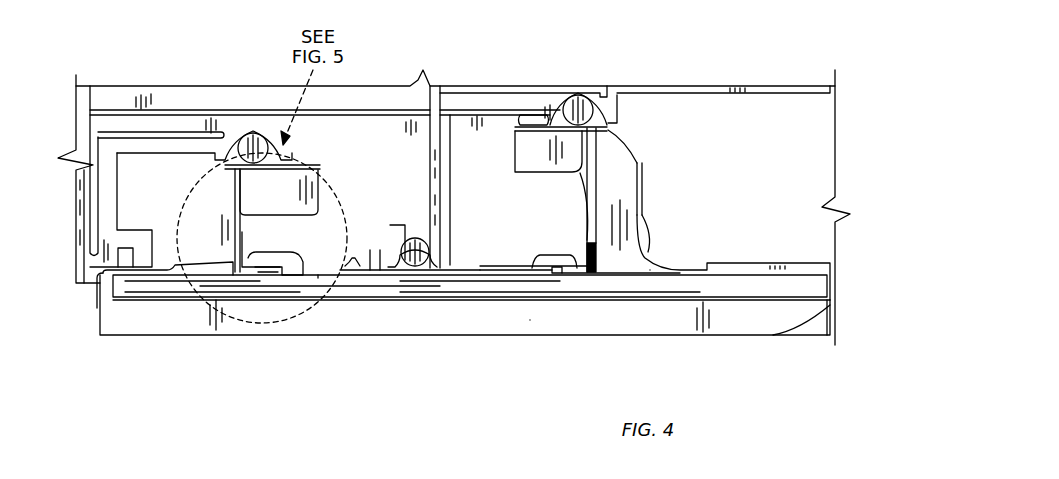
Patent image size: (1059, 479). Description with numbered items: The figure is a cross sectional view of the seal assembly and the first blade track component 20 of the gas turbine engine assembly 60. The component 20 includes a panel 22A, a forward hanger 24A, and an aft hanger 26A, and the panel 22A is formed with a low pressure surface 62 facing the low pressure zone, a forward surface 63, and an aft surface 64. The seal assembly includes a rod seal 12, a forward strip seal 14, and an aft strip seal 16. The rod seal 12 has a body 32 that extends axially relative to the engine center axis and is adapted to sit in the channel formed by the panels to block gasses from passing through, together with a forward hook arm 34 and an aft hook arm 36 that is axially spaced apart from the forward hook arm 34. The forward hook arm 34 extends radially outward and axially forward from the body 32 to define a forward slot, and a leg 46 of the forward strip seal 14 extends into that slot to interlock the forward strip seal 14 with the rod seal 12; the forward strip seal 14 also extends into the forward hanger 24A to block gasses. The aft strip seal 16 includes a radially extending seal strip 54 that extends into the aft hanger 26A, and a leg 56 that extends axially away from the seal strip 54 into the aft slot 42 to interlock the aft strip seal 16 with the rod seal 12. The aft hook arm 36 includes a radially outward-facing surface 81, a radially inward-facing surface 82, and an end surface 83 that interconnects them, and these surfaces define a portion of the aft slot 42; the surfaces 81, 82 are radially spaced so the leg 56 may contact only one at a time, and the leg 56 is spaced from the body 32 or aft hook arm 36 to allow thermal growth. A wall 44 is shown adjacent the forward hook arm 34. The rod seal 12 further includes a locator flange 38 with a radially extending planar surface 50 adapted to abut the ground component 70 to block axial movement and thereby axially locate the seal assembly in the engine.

The rod seal 12 is at (160, 292).
The forward strip seal 14 is at (230, 208).
The aft strip seal 16 is at (605, 168).
The component 20 is at (785, 225).
The panel 22A is at (683, 262).
The forward hanger 24A is at (222, 168).
The aft hanger 26A is at (632, 143).
The body 32 is at (317, 282).
The forward hook arm 34 is at (278, 248).
The aft hook arm 36 is at (543, 248).
The locator flange 38 is at (348, 258).
The aft slot 42 is at (552, 275).
The wall 44 is at (230, 238).
The leg 46 is at (254, 282).
The radially extending planar surface 50 is at (392, 268).
The seal strip 54 is at (605, 202).
The leg 56 is at (588, 281).
The gas turbine engine assembly 60 is at (570, 68).
The low pressure surface 62 is at (742, 337).
The forward surface 63 is at (98, 308).
The aft surface 64 is at (833, 312).
The ground component 70 is at (400, 218).
The radially outward-facing surface 81 is at (572, 272).
The radially inward-facing surface 82 is at (556, 268).
The end surface 83 is at (537, 268).